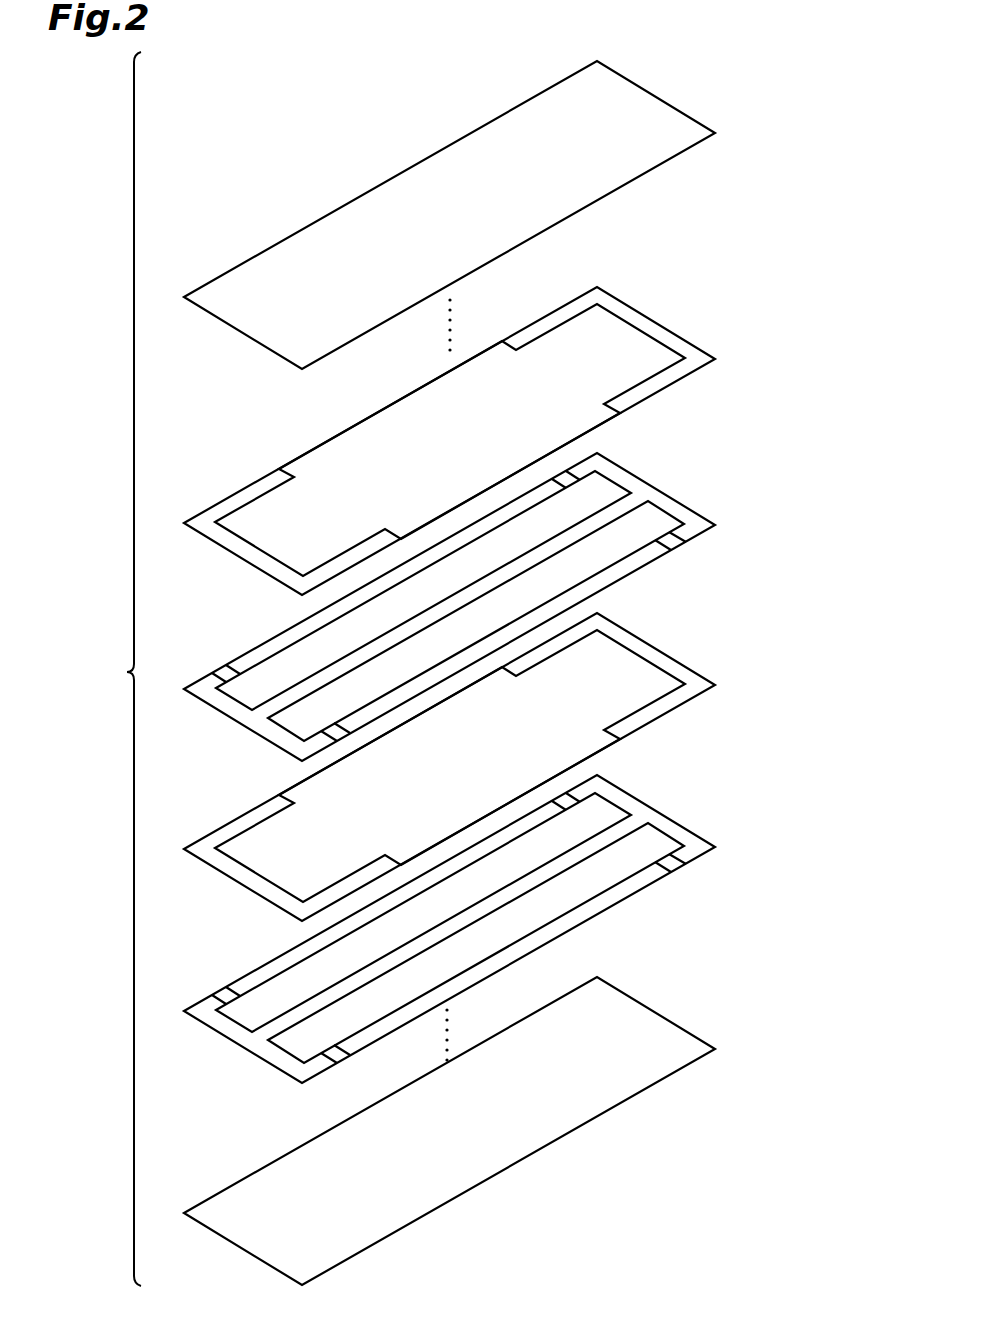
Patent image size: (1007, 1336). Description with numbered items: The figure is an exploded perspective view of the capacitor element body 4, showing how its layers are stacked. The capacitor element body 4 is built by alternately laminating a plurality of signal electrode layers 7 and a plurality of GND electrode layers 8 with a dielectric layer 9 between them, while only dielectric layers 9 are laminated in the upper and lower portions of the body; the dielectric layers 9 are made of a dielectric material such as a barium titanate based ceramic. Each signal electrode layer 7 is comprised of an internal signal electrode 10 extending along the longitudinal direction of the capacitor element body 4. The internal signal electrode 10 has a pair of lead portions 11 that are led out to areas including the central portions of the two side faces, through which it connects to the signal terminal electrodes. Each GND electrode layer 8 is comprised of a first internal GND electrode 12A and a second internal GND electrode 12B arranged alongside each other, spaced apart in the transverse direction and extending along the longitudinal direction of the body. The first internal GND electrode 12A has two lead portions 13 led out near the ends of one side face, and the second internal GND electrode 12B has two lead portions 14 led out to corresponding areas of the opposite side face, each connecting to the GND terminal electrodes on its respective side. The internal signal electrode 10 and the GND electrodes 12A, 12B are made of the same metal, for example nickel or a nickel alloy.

The capacitor element body 4 is at (131, 672).
The signal electrode layer 7 is at (457, 603).
The GND electrode layer 8 is at (490, 756).
The dielectric layer 9 is at (268, 324).
The internal signal electrode 10 is at (457, 582).
The lead portion 11 is at (605, 415).
The first internal GND electrode 12A is at (612, 494).
The second internal GND electrode 12B is at (647, 525).
The lead portion 13 is at (572, 484).
The lead portion 14 is at (664, 538).